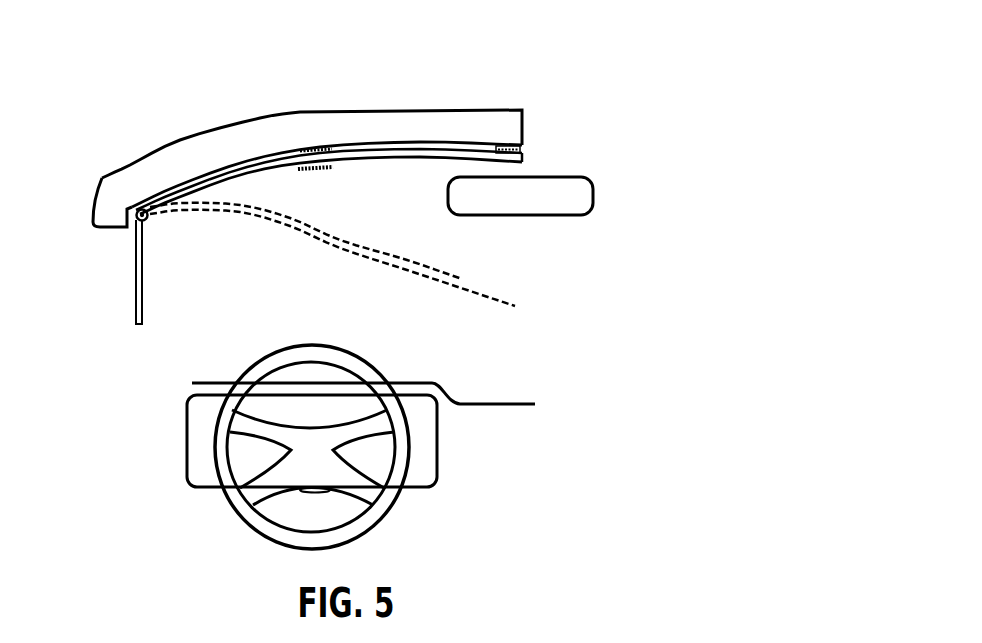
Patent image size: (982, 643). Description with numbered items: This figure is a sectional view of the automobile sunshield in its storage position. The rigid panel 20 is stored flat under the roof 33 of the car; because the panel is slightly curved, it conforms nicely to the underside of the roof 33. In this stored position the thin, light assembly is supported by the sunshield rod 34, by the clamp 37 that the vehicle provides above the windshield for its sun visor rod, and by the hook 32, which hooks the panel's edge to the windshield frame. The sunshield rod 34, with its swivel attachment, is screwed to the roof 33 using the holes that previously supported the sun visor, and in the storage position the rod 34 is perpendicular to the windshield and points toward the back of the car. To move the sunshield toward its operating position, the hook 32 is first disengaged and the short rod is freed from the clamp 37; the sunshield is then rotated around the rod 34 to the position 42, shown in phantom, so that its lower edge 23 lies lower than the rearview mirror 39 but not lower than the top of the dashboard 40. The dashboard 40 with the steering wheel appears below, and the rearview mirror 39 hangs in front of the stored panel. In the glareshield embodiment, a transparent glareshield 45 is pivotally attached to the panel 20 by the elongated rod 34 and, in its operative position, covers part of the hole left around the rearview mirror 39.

The rigid panel 20 is at (415, 158).
The lower edge 23 is at (515, 306).
The hook 32 is at (518, 143).
The roof 33 is at (228, 140).
The sunshield rod 34 is at (130, 208).
The clamp 37 is at (305, 148).
The rearview mirror 39 is at (573, 203).
The dashboard 40 is at (432, 382).
The position 42 is at (462, 279).
The glareshield 45 is at (135, 309).